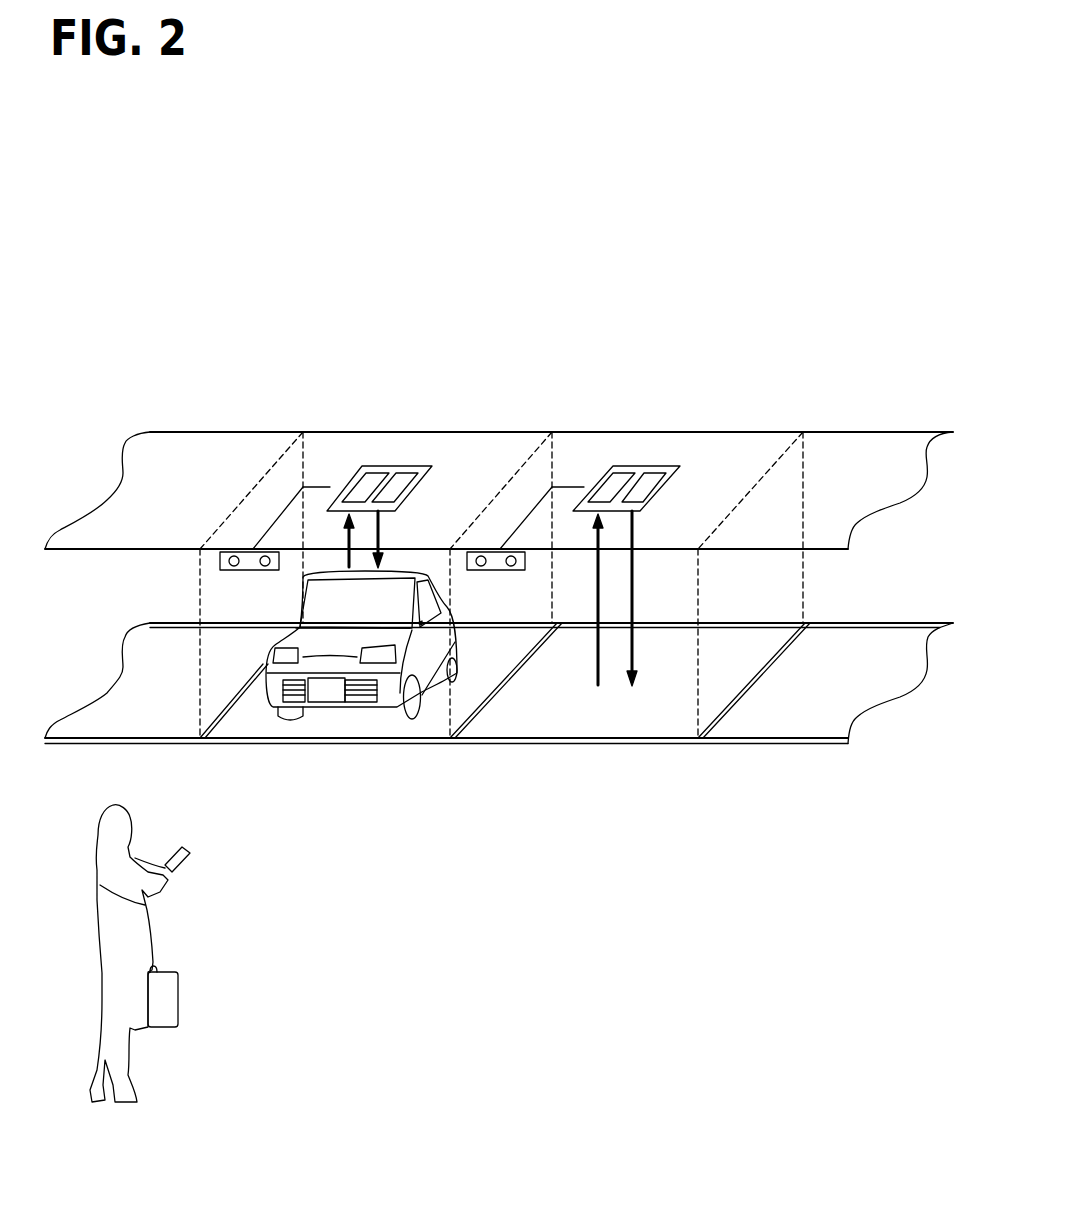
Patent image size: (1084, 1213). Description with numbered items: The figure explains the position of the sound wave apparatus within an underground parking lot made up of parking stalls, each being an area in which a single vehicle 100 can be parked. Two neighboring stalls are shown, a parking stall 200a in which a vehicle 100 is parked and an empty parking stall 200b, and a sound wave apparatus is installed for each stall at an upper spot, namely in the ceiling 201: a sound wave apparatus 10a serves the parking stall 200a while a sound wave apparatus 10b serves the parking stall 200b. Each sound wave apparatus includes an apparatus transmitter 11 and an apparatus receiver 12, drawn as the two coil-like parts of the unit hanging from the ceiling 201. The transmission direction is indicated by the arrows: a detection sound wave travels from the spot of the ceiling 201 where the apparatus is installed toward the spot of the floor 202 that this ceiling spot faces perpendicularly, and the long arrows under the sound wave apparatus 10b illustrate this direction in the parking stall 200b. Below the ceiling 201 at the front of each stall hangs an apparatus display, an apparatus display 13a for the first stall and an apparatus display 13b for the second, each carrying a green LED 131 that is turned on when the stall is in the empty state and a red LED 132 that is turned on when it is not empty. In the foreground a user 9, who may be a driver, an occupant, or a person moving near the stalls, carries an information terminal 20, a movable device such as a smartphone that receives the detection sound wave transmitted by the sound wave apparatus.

The ceiling 201 is at (462, 432).
The floor 202 is at (425, 723).
The parking stall 200a is at (257, 731).
The parking stall 200b is at (510, 715).
The sound wave apparatus 10a is at (387, 482).
The sound wave apparatus 10b is at (640, 465).
The apparatus transmitter 11 is at (403, 481).
The apparatus receiver 12 is at (367, 478).
The apparatus display 13a is at (237, 551).
The apparatus display 13b is at (500, 549).
The green LED 131 is at (234, 567).
The red LED 132 is at (266, 567).
The vehicle 100 is at (335, 708).
The user 9 is at (120, 803).
The information terminal 20 is at (188, 850).